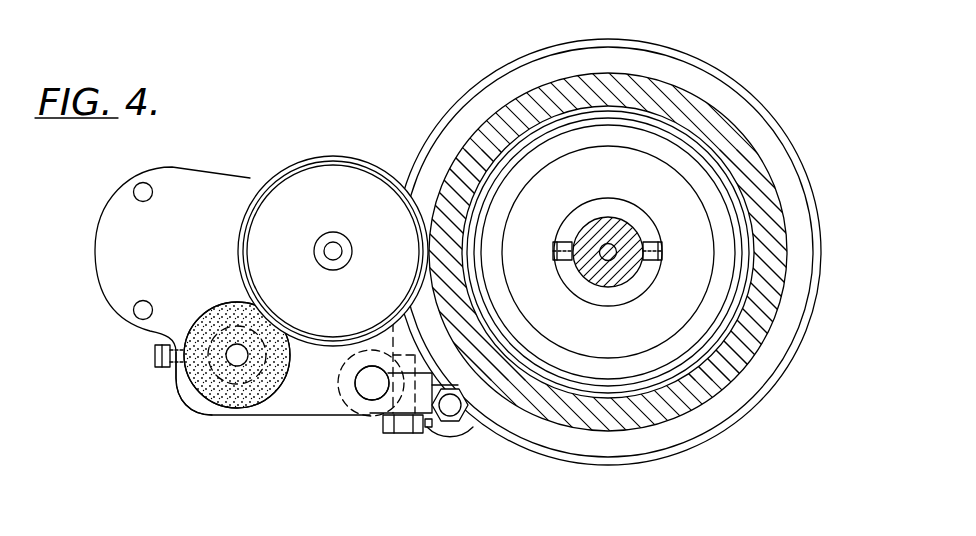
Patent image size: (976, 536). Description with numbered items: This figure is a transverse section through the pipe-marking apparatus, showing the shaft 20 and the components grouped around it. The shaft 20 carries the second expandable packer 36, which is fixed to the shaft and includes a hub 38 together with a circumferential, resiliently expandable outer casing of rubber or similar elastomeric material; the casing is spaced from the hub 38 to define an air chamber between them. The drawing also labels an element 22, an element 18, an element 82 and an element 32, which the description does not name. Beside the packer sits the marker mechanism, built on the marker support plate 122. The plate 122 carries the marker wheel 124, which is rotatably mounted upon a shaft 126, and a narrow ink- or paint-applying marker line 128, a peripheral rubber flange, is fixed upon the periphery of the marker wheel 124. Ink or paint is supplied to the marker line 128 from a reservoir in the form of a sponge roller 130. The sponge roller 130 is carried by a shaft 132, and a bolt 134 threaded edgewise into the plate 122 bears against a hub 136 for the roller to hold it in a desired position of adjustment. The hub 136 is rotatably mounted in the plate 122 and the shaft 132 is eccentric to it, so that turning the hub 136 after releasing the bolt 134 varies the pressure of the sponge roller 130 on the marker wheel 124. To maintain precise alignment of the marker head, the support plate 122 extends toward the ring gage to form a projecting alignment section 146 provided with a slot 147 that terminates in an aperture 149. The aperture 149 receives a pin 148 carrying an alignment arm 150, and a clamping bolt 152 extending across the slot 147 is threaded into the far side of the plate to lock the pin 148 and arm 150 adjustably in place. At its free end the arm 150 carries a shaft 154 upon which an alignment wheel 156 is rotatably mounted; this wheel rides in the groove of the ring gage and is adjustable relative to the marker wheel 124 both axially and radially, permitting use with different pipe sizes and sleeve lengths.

The drive wheel 22 is at (748, 72).
The wheel flange 82 is at (790, 183).
The wheel rim 18 is at (762, 167).
The second expandable packer 36 is at (722, 157).
The hub 38 is at (628, 297).
The shaft 20 is at (625, 228).
The drive assembly 32 is at (333, 215).
The marker support plate 122 is at (223, 150).
The marker wheel 124 is at (315, 170).
The marker line 128 is at (350, 154).
The shaft 126 is at (333, 232).
The sponge roller 130 is at (233, 408).
The shaft 132 is at (235, 344).
The bolt 134 is at (155, 353).
The hub 136 is at (190, 380).
The alignment section 146 is at (372, 412).
The slot 147 is at (433, 380).
The pin 148 is at (358, 383).
The aperture 149 is at (358, 371).
The alignment arm 150 is at (428, 428).
The clamping bolt 152 is at (400, 433).
The shaft 154 is at (461, 424).
The alignment wheel 156 is at (445, 437).